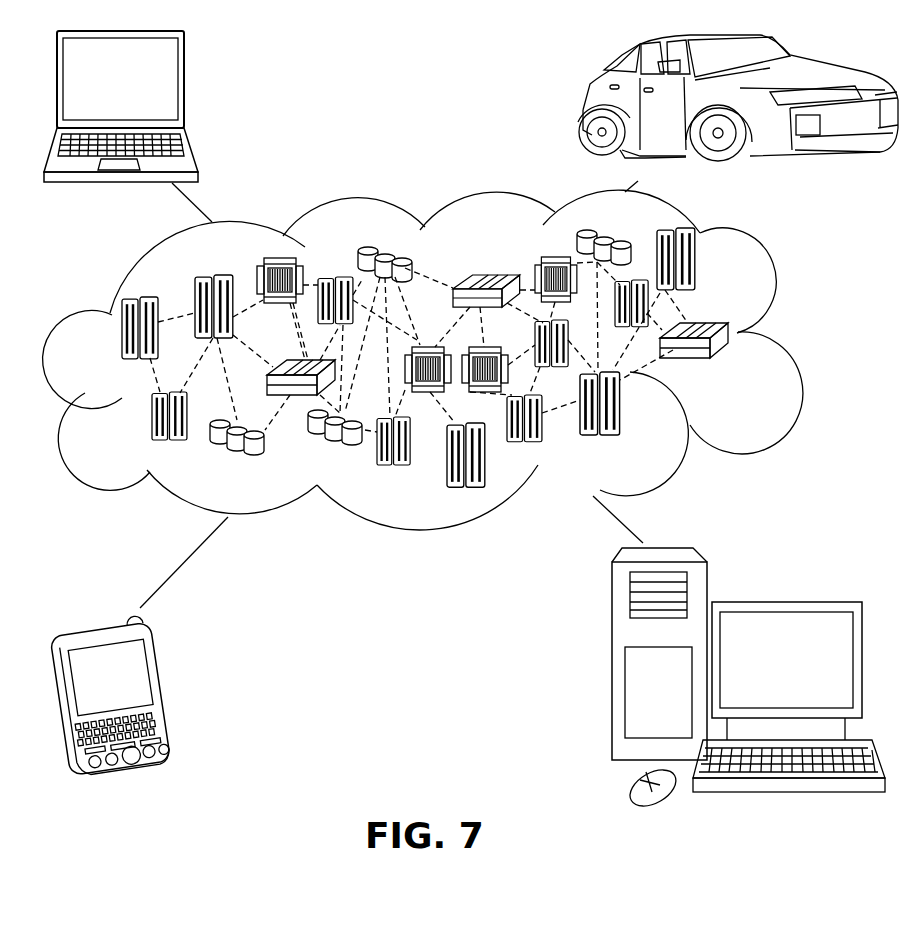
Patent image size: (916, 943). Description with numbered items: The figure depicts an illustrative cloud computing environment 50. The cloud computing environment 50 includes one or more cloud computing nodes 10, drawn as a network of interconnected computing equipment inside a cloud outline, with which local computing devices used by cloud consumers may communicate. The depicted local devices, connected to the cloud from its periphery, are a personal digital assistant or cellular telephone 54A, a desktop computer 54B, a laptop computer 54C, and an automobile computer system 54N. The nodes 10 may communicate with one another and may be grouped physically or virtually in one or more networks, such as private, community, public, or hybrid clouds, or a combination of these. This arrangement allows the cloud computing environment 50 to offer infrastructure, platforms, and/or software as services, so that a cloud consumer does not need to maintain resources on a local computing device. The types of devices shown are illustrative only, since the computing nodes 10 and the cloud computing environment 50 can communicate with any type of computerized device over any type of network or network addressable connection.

The cloud computing node 10 is at (738, 368).
The cloud computing environment 50 is at (783, 337).
The personal digital assistant or cellular telephone 54A is at (173, 688).
The desktop computer 54B is at (783, 602).
The laptop computer 54C is at (185, 88).
The automobile computer system 54N is at (585, 102).